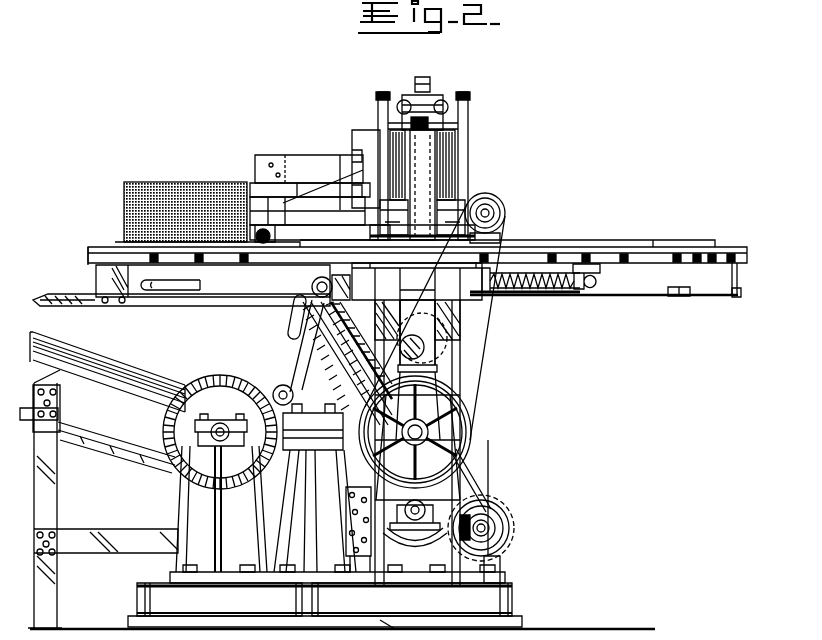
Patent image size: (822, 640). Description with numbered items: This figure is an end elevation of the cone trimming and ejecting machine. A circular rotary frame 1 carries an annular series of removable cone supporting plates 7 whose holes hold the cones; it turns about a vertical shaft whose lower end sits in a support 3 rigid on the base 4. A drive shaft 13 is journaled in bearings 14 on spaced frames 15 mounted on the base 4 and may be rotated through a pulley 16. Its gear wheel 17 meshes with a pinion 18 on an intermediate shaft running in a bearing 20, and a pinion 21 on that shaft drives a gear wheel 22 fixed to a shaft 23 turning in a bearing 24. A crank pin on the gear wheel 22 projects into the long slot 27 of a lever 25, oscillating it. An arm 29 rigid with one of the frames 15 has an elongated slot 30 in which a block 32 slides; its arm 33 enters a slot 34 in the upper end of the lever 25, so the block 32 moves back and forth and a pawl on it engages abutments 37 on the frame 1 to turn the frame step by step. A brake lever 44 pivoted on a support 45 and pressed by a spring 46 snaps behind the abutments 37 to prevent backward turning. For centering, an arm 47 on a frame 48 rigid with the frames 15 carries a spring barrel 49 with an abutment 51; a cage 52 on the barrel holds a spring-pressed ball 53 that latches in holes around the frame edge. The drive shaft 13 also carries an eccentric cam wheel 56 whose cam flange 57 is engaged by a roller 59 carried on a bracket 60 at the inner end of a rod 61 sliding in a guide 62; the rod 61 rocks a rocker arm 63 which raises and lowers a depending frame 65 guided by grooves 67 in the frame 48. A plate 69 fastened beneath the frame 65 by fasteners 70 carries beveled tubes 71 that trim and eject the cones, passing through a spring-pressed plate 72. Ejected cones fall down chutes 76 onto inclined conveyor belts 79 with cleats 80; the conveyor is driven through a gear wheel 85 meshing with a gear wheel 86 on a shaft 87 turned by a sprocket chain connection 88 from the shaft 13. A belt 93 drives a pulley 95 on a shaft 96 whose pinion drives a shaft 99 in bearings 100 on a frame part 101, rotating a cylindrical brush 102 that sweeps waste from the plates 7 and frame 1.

The frame 1 is at (625, 246).
The support 3 is at (492, 575).
The base 4 is at (516, 602).
The cone supporting plates 7 is at (692, 247).
The drive shaft 13 is at (455, 432).
The bearings 14 is at (400, 414).
The frames 15 is at (450, 368).
The pulley 16 is at (470, 398).
The gear wheel 17 is at (396, 630).
The pinion 18 is at (343, 475).
The bearing 20 is at (305, 470).
The pinion 21 is at (283, 470).
The gear wheel 22 is at (180, 462).
The shaft 23 is at (216, 424).
The bearing 24 is at (224, 424).
The lever 25 is at (290, 361).
The long slot 27 is at (318, 322).
The arm 29 is at (108, 276).
The elongated slot 30 is at (200, 287).
The block 32 is at (290, 300).
The arm 33 is at (305, 298).
The slot 34 is at (312, 328).
The abutments 37 is at (734, 297).
The brake lever 44 is at (579, 272).
The support 45 is at (522, 278).
The spring 46 is at (522, 293).
The arm 47 is at (312, 198).
The frame 48 is at (460, 167).
The spring barrel 49 is at (288, 212).
The abutment 51 is at (263, 182).
The cage 52 is at (268, 238).
The ball 53 is at (260, 252).
The wheel 56 is at (440, 445).
The cam flange 57 is at (434, 545).
The roller 59 is at (462, 346).
The bracket 60 is at (433, 357).
The rod 61 is at (422, 168).
The guide 62 is at (432, 192).
The rocker arm 63 is at (428, 80).
The depending frame 65 is at (432, 206).
The grooves 67 is at (370, 133).
The plate 69 is at (398, 205).
The fasteners 70 is at (42, 296).
The tube 71 is at (398, 216).
The plate 72 is at (398, 227).
The chutes 76 is at (345, 377).
The conveyor belts 79 is at (33, 352).
The cleats 80 is at (108, 455).
The gear wheel 85 is at (408, 548).
The gear wheel 86 is at (510, 526).
The shaft 87 is at (490, 529).
The sprocket chain connection 88 is at (472, 493).
The belt 93 is at (490, 298).
The pulley 95 is at (498, 217).
The shaft 96 is at (502, 207).
The shaft 99 is at (336, 210).
The bearings 100 is at (333, 200).
The frame part 101 is at (290, 165).
The cylindrical brush 102 is at (181, 185).